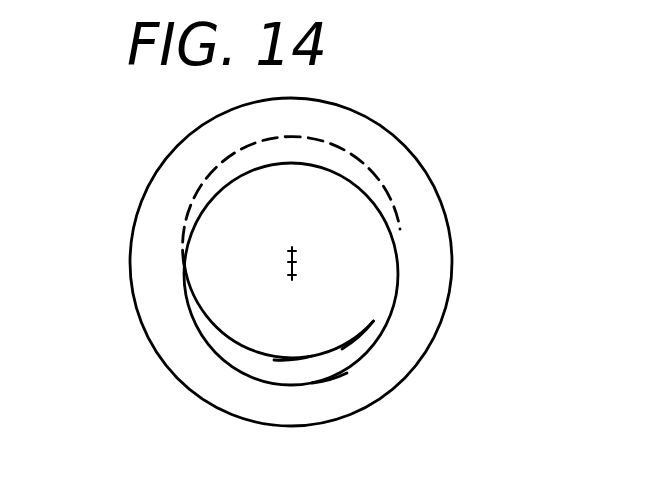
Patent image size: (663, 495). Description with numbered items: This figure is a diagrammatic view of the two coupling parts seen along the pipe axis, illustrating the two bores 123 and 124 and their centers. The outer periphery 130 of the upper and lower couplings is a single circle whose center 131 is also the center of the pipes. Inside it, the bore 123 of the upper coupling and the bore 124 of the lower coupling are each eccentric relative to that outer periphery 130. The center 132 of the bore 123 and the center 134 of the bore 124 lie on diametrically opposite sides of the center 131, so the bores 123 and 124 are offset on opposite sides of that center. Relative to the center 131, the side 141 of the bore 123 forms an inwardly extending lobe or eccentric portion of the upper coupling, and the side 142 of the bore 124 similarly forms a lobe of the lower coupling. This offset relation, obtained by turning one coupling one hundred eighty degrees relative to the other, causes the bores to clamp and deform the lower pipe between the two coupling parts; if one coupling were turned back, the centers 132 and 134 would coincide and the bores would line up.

The outer periphery of the upper and lower couplings 130 is at (128, 250).
The side of the bore 123 141 is at (342, 172).
The circular interior bore 124 is at (372, 318).
The side of the bore 124 142 is at (293, 356).
The circular interior bore 123 is at (326, 375).
The center of the bore 124 134 is at (288, 248).
The center of the outer surface of the couplings 131 is at (287, 259).
The center of the bore 123 132 is at (289, 277).